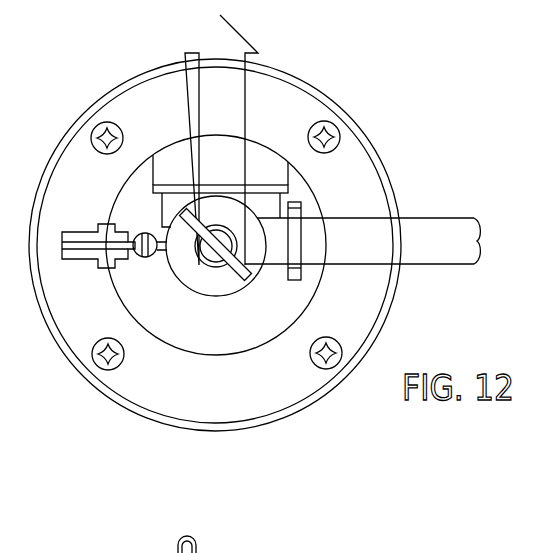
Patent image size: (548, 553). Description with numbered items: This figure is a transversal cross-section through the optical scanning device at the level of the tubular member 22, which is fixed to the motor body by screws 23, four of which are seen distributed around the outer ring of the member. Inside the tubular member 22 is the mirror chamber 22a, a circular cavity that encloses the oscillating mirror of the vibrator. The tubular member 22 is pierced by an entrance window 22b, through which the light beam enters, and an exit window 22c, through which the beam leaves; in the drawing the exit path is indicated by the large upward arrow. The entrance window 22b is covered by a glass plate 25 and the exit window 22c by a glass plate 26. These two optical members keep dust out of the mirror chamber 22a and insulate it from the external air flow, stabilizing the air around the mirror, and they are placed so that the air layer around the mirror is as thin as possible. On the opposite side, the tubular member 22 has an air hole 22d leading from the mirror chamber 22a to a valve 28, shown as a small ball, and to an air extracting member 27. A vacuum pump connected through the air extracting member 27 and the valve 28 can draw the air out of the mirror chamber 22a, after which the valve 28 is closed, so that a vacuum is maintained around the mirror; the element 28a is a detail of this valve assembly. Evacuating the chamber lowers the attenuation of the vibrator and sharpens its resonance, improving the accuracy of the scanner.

The tubular member 22 is at (227, 354).
The mirror chamber 22a is at (202, 283).
The entrance window 22b is at (313, 213).
The exit window 22c is at (262, 152).
The air hole 22d is at (162, 251).
The screws 23 is at (98, 123).
The glass plate 25 is at (298, 270).
The glass plate 26 is at (173, 185).
The air extracting member 27 is at (80, 230).
The valve 28 is at (138, 235).
The ball neck 28a is at (145, 255).